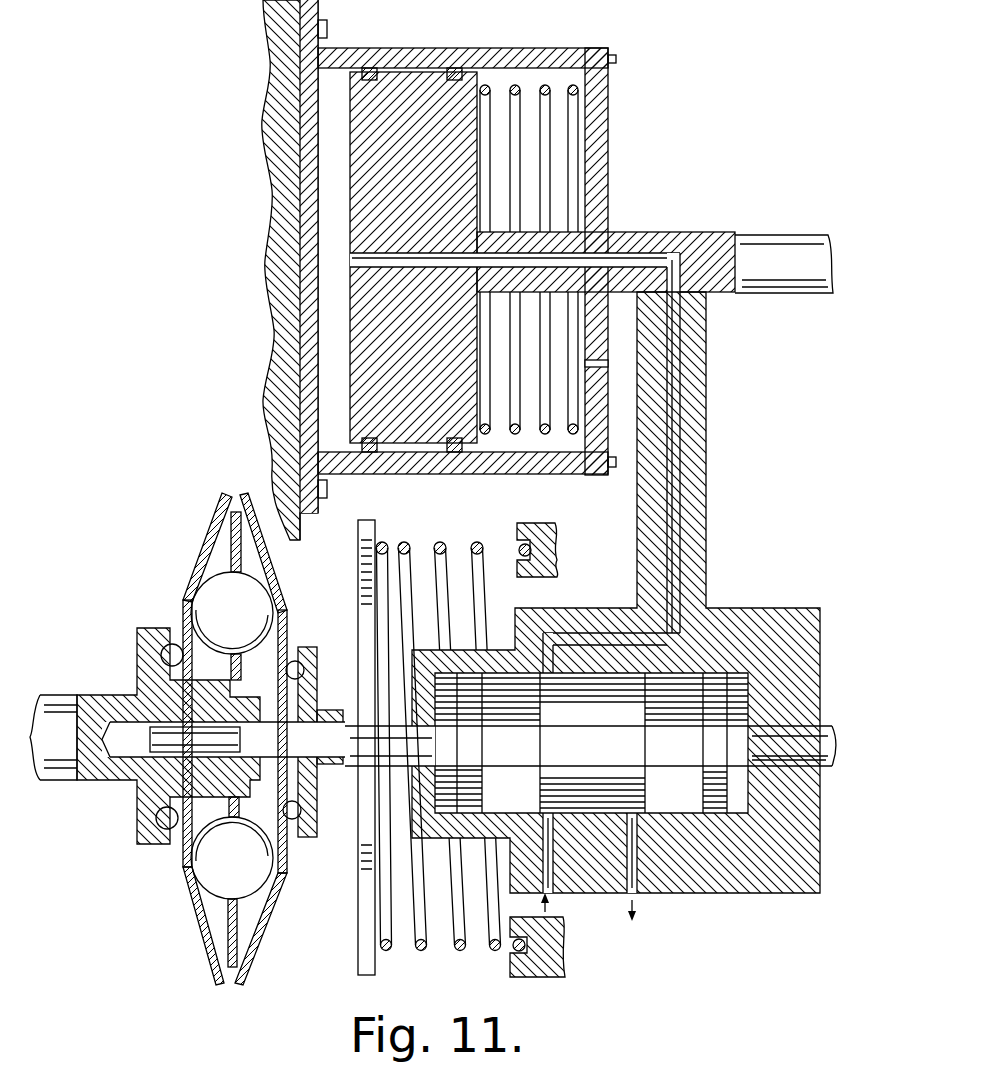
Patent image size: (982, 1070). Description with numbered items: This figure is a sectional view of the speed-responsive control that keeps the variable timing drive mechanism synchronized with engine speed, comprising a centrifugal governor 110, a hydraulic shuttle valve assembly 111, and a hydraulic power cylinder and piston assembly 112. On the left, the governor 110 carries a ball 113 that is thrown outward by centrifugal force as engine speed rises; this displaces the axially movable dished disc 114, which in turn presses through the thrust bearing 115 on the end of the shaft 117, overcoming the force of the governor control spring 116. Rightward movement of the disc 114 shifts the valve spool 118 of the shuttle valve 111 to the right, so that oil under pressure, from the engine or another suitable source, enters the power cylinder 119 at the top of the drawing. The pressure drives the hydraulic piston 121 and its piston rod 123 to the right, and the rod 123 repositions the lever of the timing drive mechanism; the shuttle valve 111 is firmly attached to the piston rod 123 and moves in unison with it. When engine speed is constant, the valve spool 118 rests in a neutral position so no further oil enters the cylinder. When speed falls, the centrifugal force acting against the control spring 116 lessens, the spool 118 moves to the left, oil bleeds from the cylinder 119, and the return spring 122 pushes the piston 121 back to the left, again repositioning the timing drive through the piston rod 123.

The centrifugal governor 110 is at (229, 1004).
The hydraulic shuttle valve assembly 111 is at (722, 905).
The hydraulic power cylinder and piston assembly 112 is at (652, 94).
The ball 113 is at (207, 870).
The dished disc 114 is at (247, 953).
The thrust bearing 115 is at (322, 648).
The governor control spring 116 is at (443, 545).
The shaft 117 is at (828, 722).
The valve spool 118 is at (598, 795).
The power cylinder 119 is at (358, 45).
The hydraulic piston 121 is at (418, 83).
The return spring 122 is at (543, 80).
The piston rod 123 is at (713, 232).